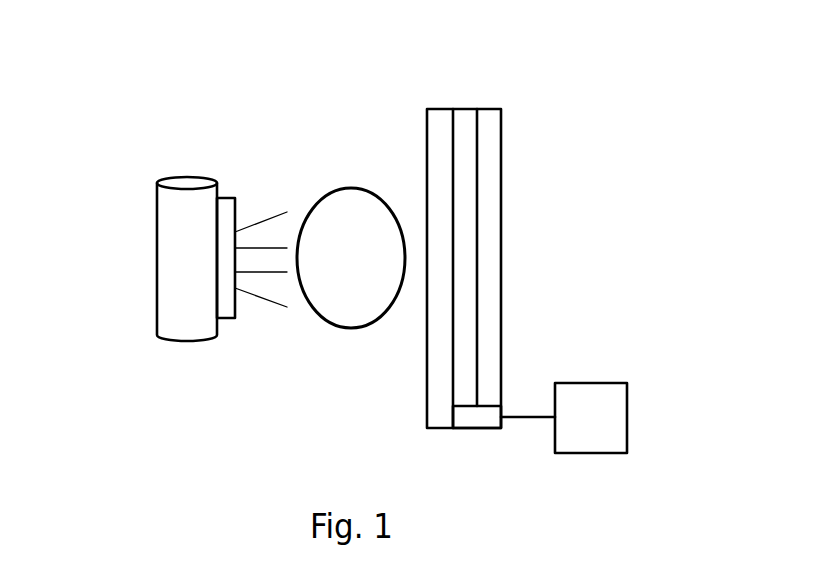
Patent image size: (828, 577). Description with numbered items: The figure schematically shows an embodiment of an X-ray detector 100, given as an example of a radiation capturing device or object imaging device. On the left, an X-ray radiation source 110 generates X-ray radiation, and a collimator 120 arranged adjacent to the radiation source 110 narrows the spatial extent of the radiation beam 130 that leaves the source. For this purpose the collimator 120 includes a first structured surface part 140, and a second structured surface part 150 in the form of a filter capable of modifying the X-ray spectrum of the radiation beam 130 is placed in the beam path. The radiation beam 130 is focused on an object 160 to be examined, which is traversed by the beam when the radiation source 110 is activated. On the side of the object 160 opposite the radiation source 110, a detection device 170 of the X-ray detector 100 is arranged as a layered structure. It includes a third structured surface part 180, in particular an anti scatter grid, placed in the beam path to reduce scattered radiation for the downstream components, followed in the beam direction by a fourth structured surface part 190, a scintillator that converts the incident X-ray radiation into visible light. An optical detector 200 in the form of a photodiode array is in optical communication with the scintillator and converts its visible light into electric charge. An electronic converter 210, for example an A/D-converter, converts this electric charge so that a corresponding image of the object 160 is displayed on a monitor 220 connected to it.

The X-ray detector 100 is at (163, 133).
The X-ray radiation source 110 is at (177, 293).
The collimator 120 is at (228, 307).
The radiation beam 130 is at (265, 300).
The first structured surface part 140 is at (200, 334).
The second structured surface part 150 is at (200, 334).
The object 160 is at (342, 215).
The detection device 170 is at (510, 108).
The third structured surface part 180 is at (437, 392).
The fourth structured surface part 190 is at (465, 353).
The optical detector 200 is at (487, 243).
The electronic converter 210 is at (473, 417).
The monitor 220 is at (613, 442).